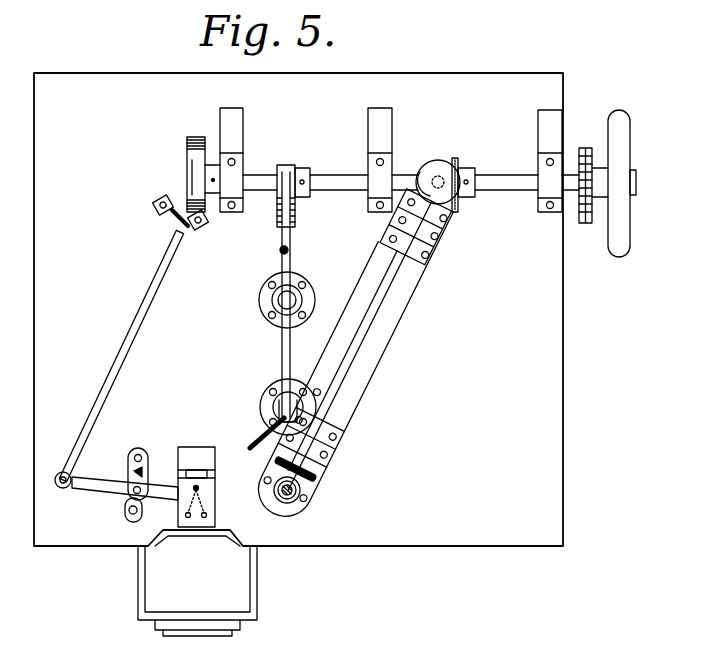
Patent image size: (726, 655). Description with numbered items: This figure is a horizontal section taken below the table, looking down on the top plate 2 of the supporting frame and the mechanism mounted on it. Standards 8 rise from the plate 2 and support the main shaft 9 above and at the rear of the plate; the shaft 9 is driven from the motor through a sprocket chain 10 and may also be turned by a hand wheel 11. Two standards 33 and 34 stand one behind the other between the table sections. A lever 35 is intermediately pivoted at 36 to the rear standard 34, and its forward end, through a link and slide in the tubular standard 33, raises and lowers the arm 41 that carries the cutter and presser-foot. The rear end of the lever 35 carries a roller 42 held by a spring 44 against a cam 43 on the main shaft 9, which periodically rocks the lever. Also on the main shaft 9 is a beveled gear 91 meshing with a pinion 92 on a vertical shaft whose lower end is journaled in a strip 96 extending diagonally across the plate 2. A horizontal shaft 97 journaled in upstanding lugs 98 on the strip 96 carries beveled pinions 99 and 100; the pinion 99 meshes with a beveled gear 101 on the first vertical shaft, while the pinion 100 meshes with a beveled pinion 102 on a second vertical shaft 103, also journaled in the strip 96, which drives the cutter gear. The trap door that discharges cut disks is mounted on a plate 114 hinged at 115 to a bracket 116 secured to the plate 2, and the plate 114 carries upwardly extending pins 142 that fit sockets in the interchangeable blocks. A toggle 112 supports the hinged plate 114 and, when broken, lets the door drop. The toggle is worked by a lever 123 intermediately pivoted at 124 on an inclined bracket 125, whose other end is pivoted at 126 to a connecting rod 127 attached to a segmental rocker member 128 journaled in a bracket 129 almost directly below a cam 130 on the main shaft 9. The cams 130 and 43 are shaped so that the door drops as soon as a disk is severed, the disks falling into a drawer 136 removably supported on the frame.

The top plate 2 is at (298, 309).
The standards 8 is at (243, 128).
The main shaft 9 is at (500, 190).
The sprocket chain 10 is at (584, 223).
The hand wheel 11 is at (626, 163).
The standard 33 is at (262, 400).
The rear standard 34 is at (259, 301).
The lever 35 is at (282, 343).
The pivot 36 is at (300, 296).
The arm 41 is at (250, 442).
The roller 42 is at (302, 168).
The cam 43 is at (283, 165).
The spring 44 is at (288, 251).
The beveled gear 91 is at (457, 163).
The pinion 92 is at (440, 176).
The strip 96 is at (364, 395).
The horizontal shaft 97 is at (368, 330).
The lugs 98 is at (430, 250).
The beveled pinion 99 is at (455, 210).
The beveled pinion 100 is at (316, 480).
The beveled gear 101 is at (438, 175).
The beveled pinion 102 is at (302, 500).
The vertical shaft 103 is at (287, 504).
The toggle 112 is at (176, 637).
The plate 114 is at (200, 492).
The hinge 115 is at (208, 476).
The bracket 116 is at (190, 447).
The lever 123 is at (95, 488).
The pivot 124 is at (128, 476).
The inclined bracket 125 is at (142, 514).
The pivotal connection 126 is at (58, 474).
The connecting rod 127 is at (133, 330).
The segmental rocker member 128 is at (172, 205).
The bracket 129 is at (168, 216).
The cam 130 is at (187, 155).
The container or drawer 136 is at (215, 593).
The pins 142 is at (192, 516).